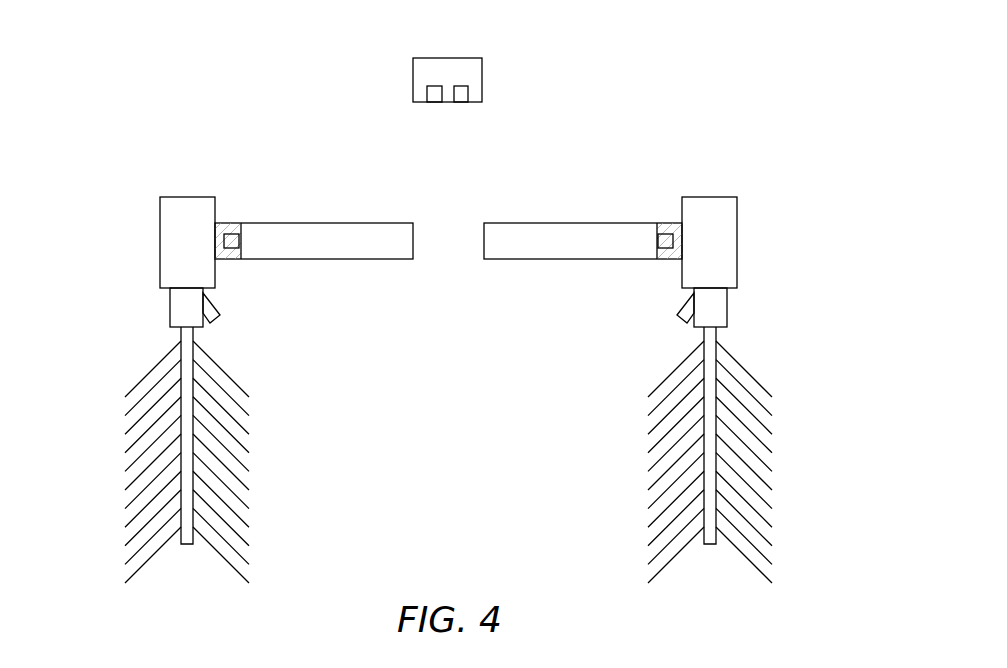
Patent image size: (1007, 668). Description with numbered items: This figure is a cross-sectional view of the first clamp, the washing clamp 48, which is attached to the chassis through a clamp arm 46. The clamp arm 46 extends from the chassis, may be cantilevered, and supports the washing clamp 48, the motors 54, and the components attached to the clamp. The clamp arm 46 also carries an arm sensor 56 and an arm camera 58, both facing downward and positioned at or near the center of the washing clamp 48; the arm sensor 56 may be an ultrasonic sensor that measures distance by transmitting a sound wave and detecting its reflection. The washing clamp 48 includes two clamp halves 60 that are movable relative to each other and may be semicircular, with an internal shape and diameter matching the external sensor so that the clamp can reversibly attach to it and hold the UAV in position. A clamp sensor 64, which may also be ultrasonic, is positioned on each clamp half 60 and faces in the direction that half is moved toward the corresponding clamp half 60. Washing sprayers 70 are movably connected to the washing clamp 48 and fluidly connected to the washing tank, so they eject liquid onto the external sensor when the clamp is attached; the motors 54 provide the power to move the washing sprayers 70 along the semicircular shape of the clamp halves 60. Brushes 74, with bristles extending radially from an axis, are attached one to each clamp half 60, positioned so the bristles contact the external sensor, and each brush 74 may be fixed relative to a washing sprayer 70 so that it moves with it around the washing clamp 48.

The clamp arm 46 is at (465, 58).
The arm sensor 56 is at (434, 102).
The arm camera 58 is at (461, 102).
The washing clamp 48 is at (585, 223).
The clamp halves 60 is at (402, 262).
The clamp sensor 64 is at (240, 240).
The motor 54 is at (160, 215).
The washing sprayer 70 is at (217, 303).
The brush 74 is at (187, 545).